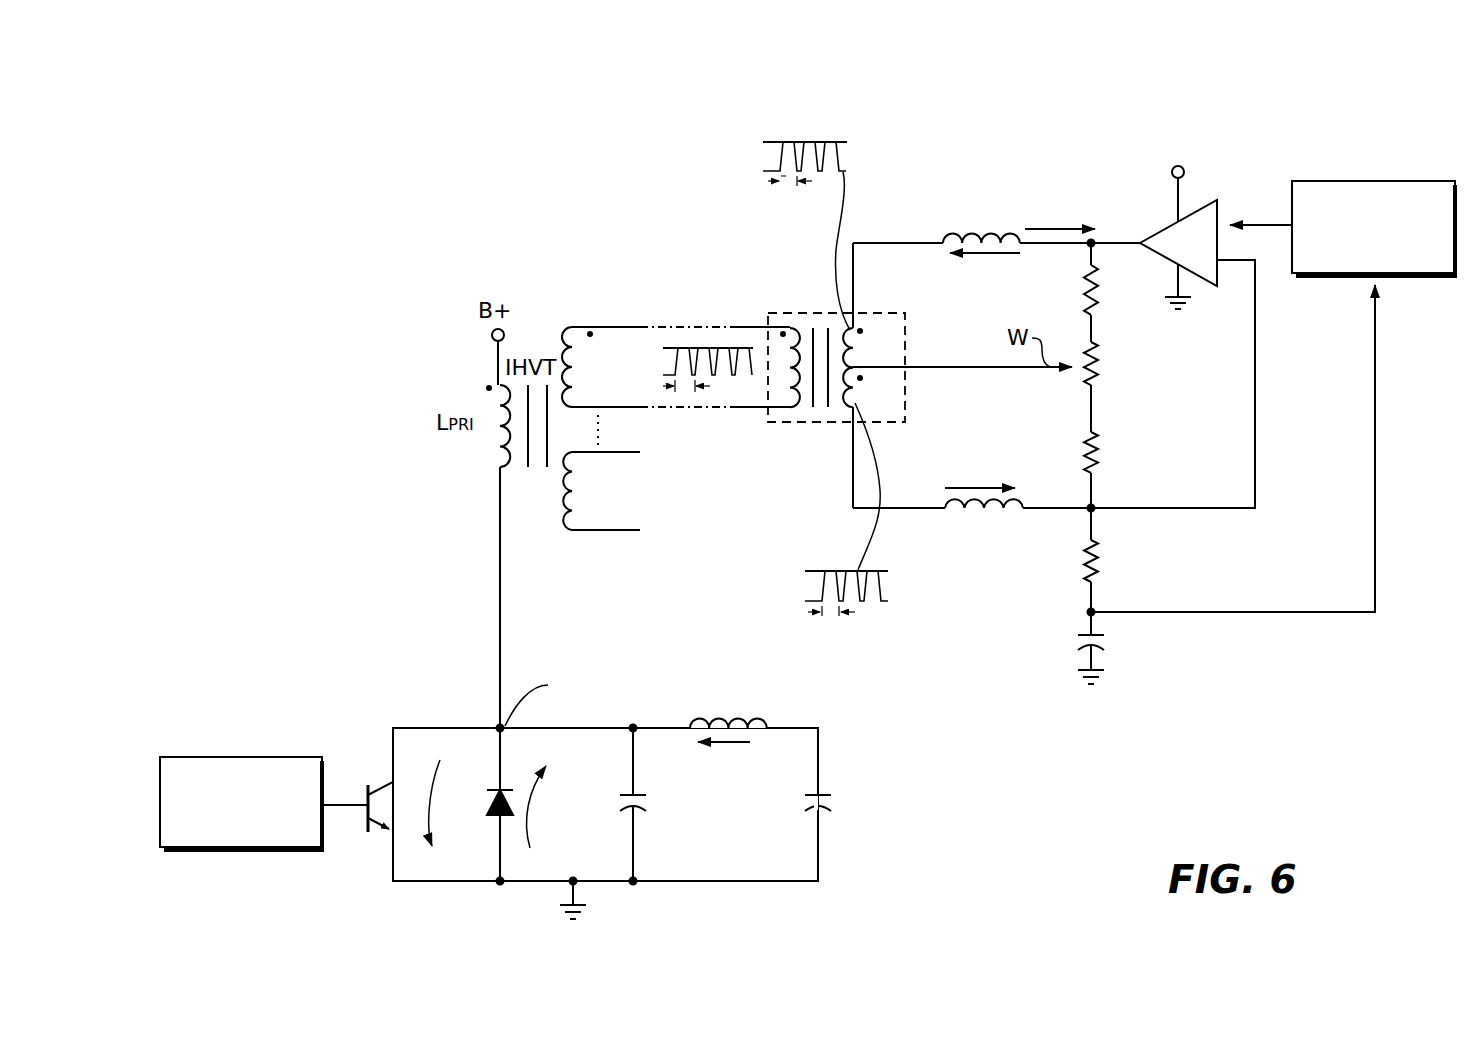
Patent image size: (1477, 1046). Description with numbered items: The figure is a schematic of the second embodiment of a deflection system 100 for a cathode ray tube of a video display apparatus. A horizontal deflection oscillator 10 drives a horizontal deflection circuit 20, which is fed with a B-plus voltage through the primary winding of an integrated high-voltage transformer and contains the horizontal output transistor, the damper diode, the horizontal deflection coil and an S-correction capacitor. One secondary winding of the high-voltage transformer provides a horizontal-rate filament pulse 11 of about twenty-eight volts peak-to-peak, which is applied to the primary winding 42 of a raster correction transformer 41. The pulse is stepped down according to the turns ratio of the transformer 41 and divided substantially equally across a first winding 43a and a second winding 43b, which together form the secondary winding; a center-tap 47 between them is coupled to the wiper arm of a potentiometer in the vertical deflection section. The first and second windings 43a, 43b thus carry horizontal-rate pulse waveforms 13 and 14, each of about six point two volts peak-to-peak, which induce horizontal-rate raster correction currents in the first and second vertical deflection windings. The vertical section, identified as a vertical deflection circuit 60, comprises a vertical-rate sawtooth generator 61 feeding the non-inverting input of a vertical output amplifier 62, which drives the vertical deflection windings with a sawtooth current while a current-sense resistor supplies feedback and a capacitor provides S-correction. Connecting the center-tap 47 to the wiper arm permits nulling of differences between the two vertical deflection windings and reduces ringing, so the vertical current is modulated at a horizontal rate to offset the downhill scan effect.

The horizontal deflection oscillator 10 is at (258, 757).
The horizontal-rate filament pulse 11 is at (690, 350).
The horizontal-rate pulse waveform 13 is at (838, 160).
The horizontal-rate pulse waveform 14 is at (880, 590).
The horizontal deflection circuit 20 is at (455, 712).
The raster correction transformer 41 is at (823, 373).
The primary winding 42 is at (802, 420).
The first winding 43a is at (848, 330).
The second winding 43b is at (848, 400).
The center-tap 47 is at (930, 368).
The vertical deflection amplifier 60 is at (1198, 414).
The vertical-rate sawtooth generator 61 is at (1392, 181).
The vertical output amplifier 62 is at (1155, 232).
The deflection system 100 is at (990, 132).